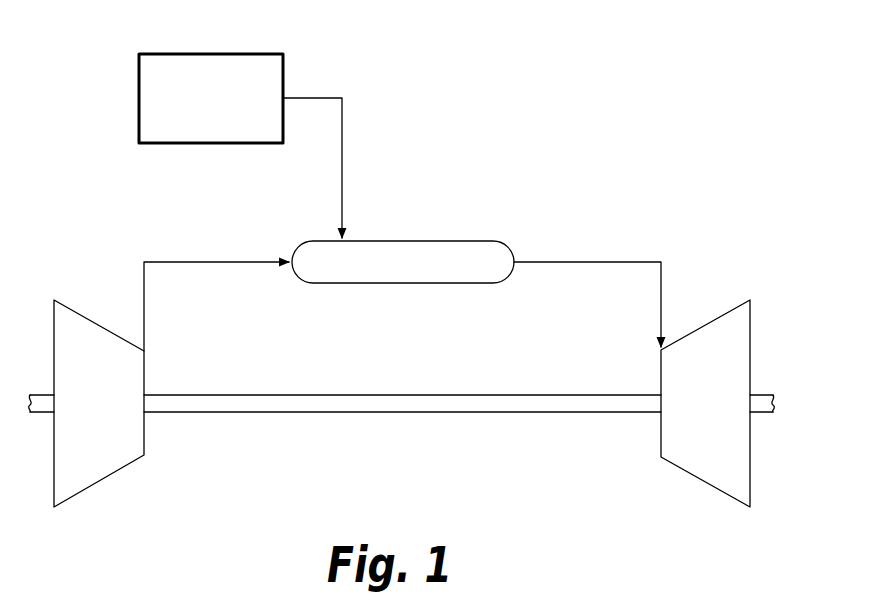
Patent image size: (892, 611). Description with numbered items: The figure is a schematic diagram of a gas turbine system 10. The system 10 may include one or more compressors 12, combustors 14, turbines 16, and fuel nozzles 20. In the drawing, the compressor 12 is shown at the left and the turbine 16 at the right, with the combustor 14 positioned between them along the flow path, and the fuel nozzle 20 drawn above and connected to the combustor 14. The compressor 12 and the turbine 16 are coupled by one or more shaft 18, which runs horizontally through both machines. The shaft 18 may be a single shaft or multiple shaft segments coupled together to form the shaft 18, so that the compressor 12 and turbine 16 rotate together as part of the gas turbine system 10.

The gas turbine system 10 is at (644, 181).
The compressor 12 is at (100, 482).
The combustor 14 is at (402, 241).
The turbine 16 is at (752, 316).
The shaft 18 is at (403, 413).
The fuel nozzle 20 is at (283, 54).